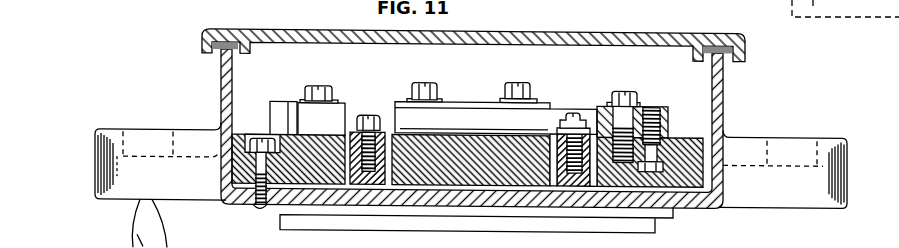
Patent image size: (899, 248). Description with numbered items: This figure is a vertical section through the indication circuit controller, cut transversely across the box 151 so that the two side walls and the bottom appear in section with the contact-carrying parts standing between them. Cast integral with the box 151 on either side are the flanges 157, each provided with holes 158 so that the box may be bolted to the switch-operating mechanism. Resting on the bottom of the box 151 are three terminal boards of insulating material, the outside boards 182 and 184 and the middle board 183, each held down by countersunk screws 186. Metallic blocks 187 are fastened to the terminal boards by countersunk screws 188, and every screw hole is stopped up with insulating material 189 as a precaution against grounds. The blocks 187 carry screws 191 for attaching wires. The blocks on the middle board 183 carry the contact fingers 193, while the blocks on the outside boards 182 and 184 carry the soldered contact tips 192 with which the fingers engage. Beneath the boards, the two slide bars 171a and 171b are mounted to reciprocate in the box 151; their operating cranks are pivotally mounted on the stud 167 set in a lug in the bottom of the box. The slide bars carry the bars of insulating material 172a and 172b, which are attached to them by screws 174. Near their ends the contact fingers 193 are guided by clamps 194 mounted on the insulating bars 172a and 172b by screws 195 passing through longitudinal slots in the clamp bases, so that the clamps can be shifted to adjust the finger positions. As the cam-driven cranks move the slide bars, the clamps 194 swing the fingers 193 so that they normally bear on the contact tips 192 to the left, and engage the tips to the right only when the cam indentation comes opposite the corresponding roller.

The box 151 is at (723, 89).
The flanges 157 is at (189, 131).
The holes 158 is at (140, 136).
The terminal board 182 is at (311, 133).
The terminal board 183 is at (445, 125).
The terminal board 184 is at (689, 133).
The countersunk screws 186 is at (257, 206).
The metallic blocks 187 is at (655, 103).
The countersunk screws 188 is at (668, 112).
The insulating material 189 is at (259, 134).
The screws 191 is at (319, 88).
The contact tips 192 is at (297, 100).
The contact fingers 193 is at (480, 112).
The clamps 194 is at (569, 110).
The screws 195 is at (361, 115).
The stud 167 is at (572, 244).
The slide bar 171a is at (558, 181).
The slide bar 171b is at (353, 184).
The bar of insulating material 172a is at (593, 169).
The bar of insulating material 172b is at (390, 156).
The screws 174 is at (580, 184).